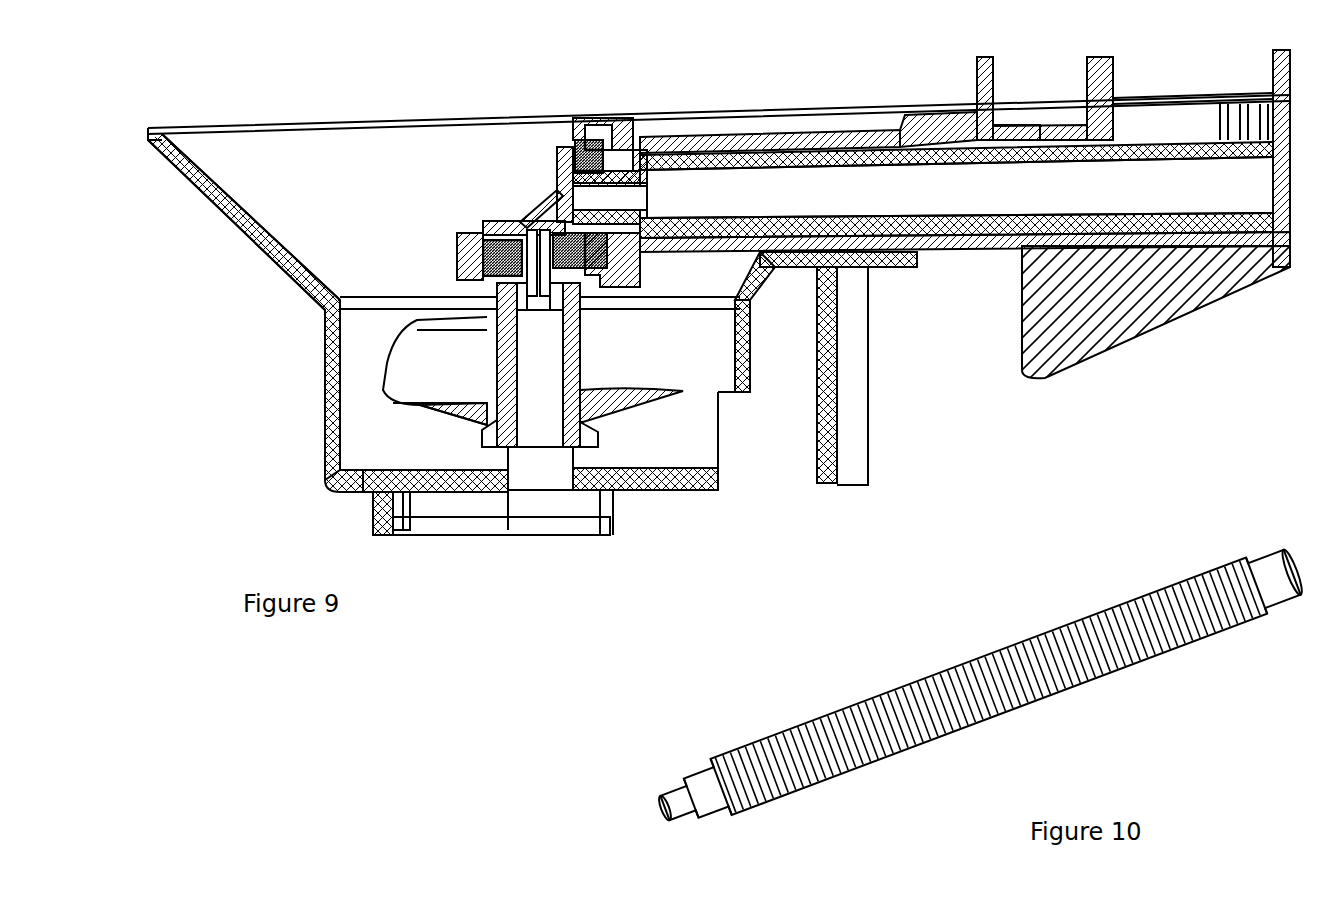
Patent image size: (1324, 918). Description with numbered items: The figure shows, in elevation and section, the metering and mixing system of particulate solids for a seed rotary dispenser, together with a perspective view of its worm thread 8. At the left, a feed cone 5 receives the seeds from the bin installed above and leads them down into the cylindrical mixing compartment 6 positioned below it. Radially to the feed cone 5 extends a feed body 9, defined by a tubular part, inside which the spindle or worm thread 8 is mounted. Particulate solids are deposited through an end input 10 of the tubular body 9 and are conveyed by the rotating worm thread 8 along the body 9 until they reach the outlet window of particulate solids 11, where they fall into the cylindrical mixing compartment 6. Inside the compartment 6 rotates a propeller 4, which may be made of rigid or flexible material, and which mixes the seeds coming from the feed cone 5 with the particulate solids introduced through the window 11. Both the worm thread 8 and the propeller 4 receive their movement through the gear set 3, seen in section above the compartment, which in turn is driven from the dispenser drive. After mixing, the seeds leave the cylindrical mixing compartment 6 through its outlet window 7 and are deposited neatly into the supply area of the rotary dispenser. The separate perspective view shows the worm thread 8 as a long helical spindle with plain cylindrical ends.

In FIG. 9, the gear set 3 is at (485, 232).
In FIG. 9, the propeller 4 is at (510, 384).
In FIG. 9, the feed cone 5 is at (258, 250).
In FIG. 9, the cylindrical mixing compartment 6 is at (375, 424).
In FIG. 9, the outlet window 7 is at (733, 432).
In FIG. 9, the worm thread 8 is at (1080, 222).
In FIG. 10, the worm thread 8 is at (1150, 650).
In FIG. 9, the feed body 9 is at (853, 135).
In FIG. 9, the end input 10 is at (1180, 120).
In FIG. 9, the outlet window of particulate solids 11 is at (673, 256).